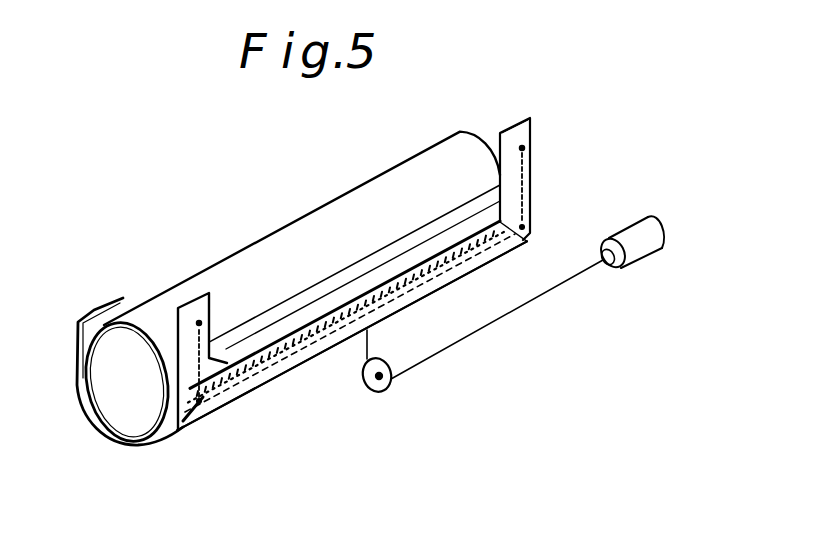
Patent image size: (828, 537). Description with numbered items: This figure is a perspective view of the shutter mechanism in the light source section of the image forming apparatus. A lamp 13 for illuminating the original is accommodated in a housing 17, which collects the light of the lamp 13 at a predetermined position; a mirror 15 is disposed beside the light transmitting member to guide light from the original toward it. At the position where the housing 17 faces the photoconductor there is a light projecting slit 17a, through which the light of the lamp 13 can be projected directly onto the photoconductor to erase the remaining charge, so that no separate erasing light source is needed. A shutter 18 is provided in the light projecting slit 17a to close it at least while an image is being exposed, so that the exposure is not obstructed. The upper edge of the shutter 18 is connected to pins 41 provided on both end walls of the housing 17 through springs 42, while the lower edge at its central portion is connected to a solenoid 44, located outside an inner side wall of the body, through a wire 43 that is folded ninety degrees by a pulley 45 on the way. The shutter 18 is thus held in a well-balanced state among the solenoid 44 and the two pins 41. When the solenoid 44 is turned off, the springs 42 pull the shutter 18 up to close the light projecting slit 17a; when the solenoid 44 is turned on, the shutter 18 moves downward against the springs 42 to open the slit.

The lamp 13 is at (136, 412).
The mirror 15 is at (407, 243).
The housing 17 is at (177, 418).
The light projecting slit 17a is at (360, 302).
The shutter 18 is at (462, 277).
The pin 41 is at (204, 294).
The spring 42 is at (180, 372).
The wire 43 is at (455, 348).
The solenoid 44 is at (653, 235).
The pulley 45 is at (382, 388).